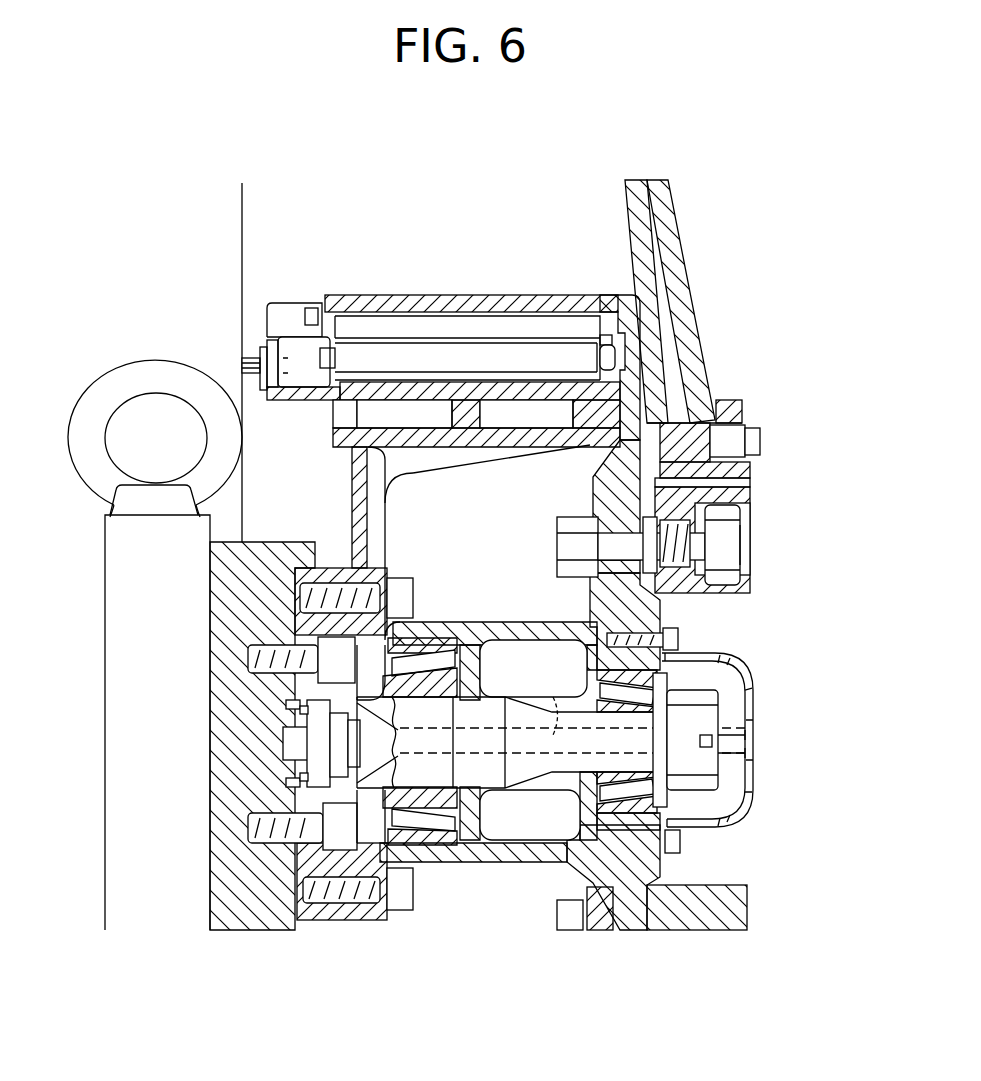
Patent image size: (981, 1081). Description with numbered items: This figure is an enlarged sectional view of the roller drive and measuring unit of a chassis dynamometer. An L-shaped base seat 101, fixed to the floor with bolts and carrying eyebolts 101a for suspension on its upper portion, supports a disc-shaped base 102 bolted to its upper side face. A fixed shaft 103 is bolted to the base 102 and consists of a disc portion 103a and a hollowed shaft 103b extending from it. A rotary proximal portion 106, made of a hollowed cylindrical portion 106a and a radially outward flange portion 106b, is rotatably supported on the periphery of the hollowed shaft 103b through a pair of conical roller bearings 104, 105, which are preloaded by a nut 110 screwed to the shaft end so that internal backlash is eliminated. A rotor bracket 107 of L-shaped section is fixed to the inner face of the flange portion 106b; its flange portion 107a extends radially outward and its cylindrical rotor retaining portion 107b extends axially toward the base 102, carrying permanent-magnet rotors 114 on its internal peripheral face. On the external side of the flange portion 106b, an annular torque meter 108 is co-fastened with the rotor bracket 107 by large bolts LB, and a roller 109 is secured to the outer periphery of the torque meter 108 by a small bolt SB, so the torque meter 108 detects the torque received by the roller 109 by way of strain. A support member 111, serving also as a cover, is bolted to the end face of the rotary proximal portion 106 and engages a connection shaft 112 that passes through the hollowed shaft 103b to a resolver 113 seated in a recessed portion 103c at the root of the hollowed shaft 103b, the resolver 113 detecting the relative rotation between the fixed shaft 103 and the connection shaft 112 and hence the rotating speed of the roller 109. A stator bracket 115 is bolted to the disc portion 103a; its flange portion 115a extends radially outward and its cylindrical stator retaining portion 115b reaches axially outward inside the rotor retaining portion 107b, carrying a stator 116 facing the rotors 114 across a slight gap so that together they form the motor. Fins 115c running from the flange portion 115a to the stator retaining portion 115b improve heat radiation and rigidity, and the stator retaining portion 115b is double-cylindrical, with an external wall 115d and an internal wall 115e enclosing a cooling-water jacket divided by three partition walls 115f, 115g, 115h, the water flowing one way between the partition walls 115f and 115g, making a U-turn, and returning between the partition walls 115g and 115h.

The base seat 101 is at (105, 678).
The eyebolt 101a is at (137, 362).
The base 102 is at (290, 541).
The fixed shaft 103 is at (500, 696).
The disc portion 103a is at (340, 567).
The hollowed shaft 103b is at (520, 790).
The recessed portion 103c is at (283, 717).
The conical roller bearing 104 is at (450, 630).
The bearing 105 is at (566, 640).
The rotary proximal portion 106 is at (509, 870).
The hollowed cylindrical portion 106a is at (503, 622).
The flange portion 106b is at (607, 512).
The rotor bracket 107 is at (628, 293).
The flange portion 107a is at (600, 482).
The rotor retaining portion 107b is at (447, 296).
The torque meter 108 is at (750, 490).
The roller 109 is at (706, 320).
The nut 110 is at (700, 690).
The support member 111 is at (747, 694).
The connection shaft 112 is at (553, 705).
The resolver 113 is at (283, 760).
The rotor 114 is at (410, 318).
The stator bracket 115 is at (386, 538).
The flange portion 115a is at (353, 480).
The stator retaining portion 115b is at (297, 402).
The fin 115c is at (407, 474).
The external wall 115d is at (404, 414).
The internal wall 115e is at (536, 414).
The partition wall 115f is at (335, 414).
The partition wall 115g is at (470, 446).
The partition wall 115h is at (548, 392).
The stator 116 is at (370, 355).
The small bolt SB is at (762, 433).
The large bolt LB is at (745, 543).